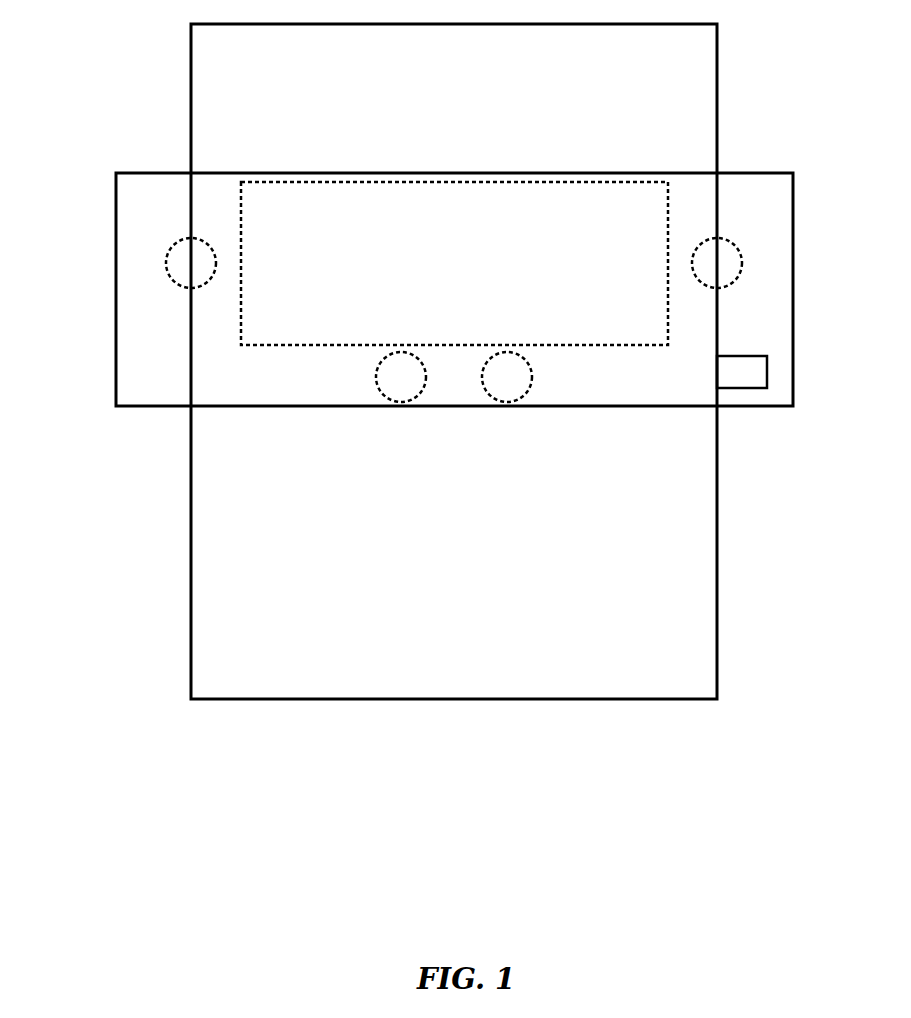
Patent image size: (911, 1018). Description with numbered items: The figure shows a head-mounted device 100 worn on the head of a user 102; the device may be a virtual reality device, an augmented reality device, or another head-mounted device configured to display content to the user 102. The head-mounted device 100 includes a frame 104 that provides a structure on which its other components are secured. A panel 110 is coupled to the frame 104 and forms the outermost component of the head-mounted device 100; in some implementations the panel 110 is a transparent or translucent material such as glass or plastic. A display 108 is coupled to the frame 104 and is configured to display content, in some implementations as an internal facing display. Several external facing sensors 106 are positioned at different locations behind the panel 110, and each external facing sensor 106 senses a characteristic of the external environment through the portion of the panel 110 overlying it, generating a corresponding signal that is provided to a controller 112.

The head-mounted device 100 is at (72, 164).
The user 102 is at (191, 50).
The frame 104 is at (116, 372).
The external facing sensor 106 is at (165, 265).
The display 108 is at (668, 210).
The panel 110 is at (193, 380).
The controller 112 is at (767, 368).